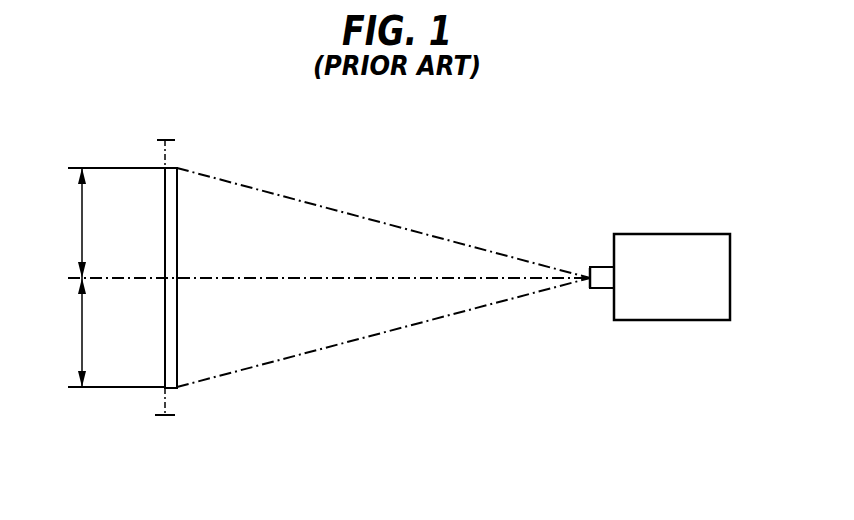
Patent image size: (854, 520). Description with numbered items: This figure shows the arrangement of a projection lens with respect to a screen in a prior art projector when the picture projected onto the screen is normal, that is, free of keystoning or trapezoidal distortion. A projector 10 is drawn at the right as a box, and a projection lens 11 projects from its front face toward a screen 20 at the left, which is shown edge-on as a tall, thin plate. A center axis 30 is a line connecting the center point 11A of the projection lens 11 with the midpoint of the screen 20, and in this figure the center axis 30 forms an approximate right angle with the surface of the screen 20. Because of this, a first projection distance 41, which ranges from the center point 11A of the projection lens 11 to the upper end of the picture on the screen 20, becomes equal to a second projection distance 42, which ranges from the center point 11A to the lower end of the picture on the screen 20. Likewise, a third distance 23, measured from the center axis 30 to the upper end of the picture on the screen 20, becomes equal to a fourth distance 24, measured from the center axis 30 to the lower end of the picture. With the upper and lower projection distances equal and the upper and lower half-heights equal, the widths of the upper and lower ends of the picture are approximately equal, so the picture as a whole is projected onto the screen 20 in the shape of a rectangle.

The projector 10 is at (708, 320).
The projection lens 11 is at (607, 290).
The center point of the projection lens 11A is at (588, 290).
The screen 20 is at (178, 207).
The third distance 23 is at (116, 223).
The fourth distance 24 is at (116, 332).
The center axis 30 is at (291, 278).
The first projection distance 41 is at (418, 231).
The second projection distance 42 is at (390, 331).